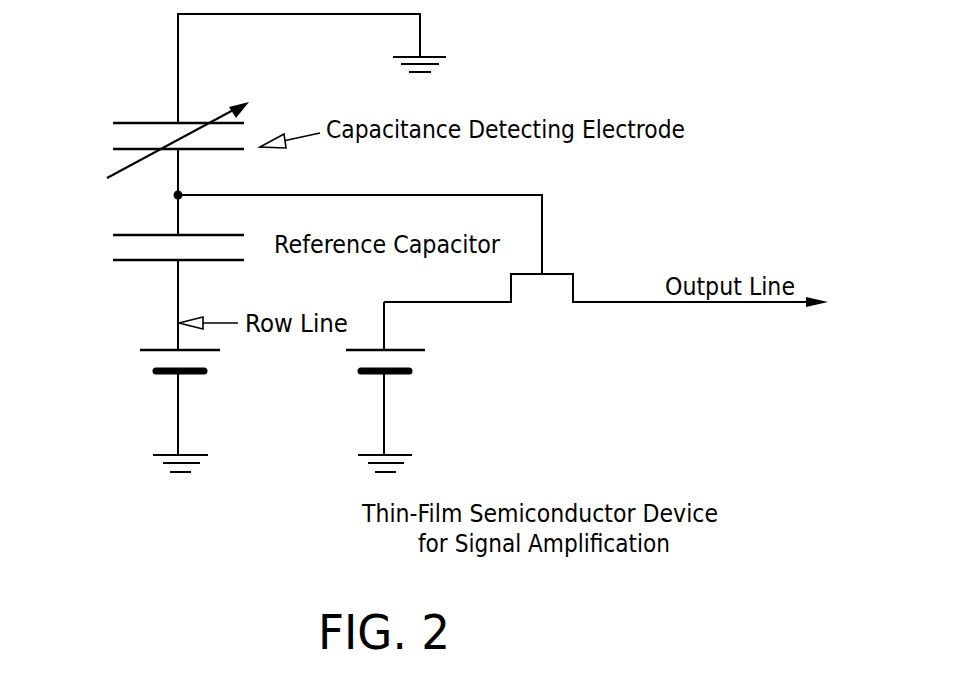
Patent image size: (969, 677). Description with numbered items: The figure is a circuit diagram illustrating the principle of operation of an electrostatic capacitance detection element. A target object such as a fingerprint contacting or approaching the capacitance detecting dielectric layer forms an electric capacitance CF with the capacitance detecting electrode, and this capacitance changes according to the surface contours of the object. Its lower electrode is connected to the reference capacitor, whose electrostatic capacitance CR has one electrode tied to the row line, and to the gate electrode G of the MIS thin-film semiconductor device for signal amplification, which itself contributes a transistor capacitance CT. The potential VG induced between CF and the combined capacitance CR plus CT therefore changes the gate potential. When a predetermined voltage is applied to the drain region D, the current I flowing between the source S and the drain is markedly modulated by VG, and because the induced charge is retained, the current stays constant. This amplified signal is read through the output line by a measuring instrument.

The electric capacitance CF is at (150, 140).
The electrostatic capacitance of the reference capacitor CR is at (148, 254).
The transistor capacitance CT is at (606, 369).
The gate electrode G is at (555, 260).
The drain region D is at (505, 329).
The source S is at (575, 329).
The source-drain current I is at (856, 301).